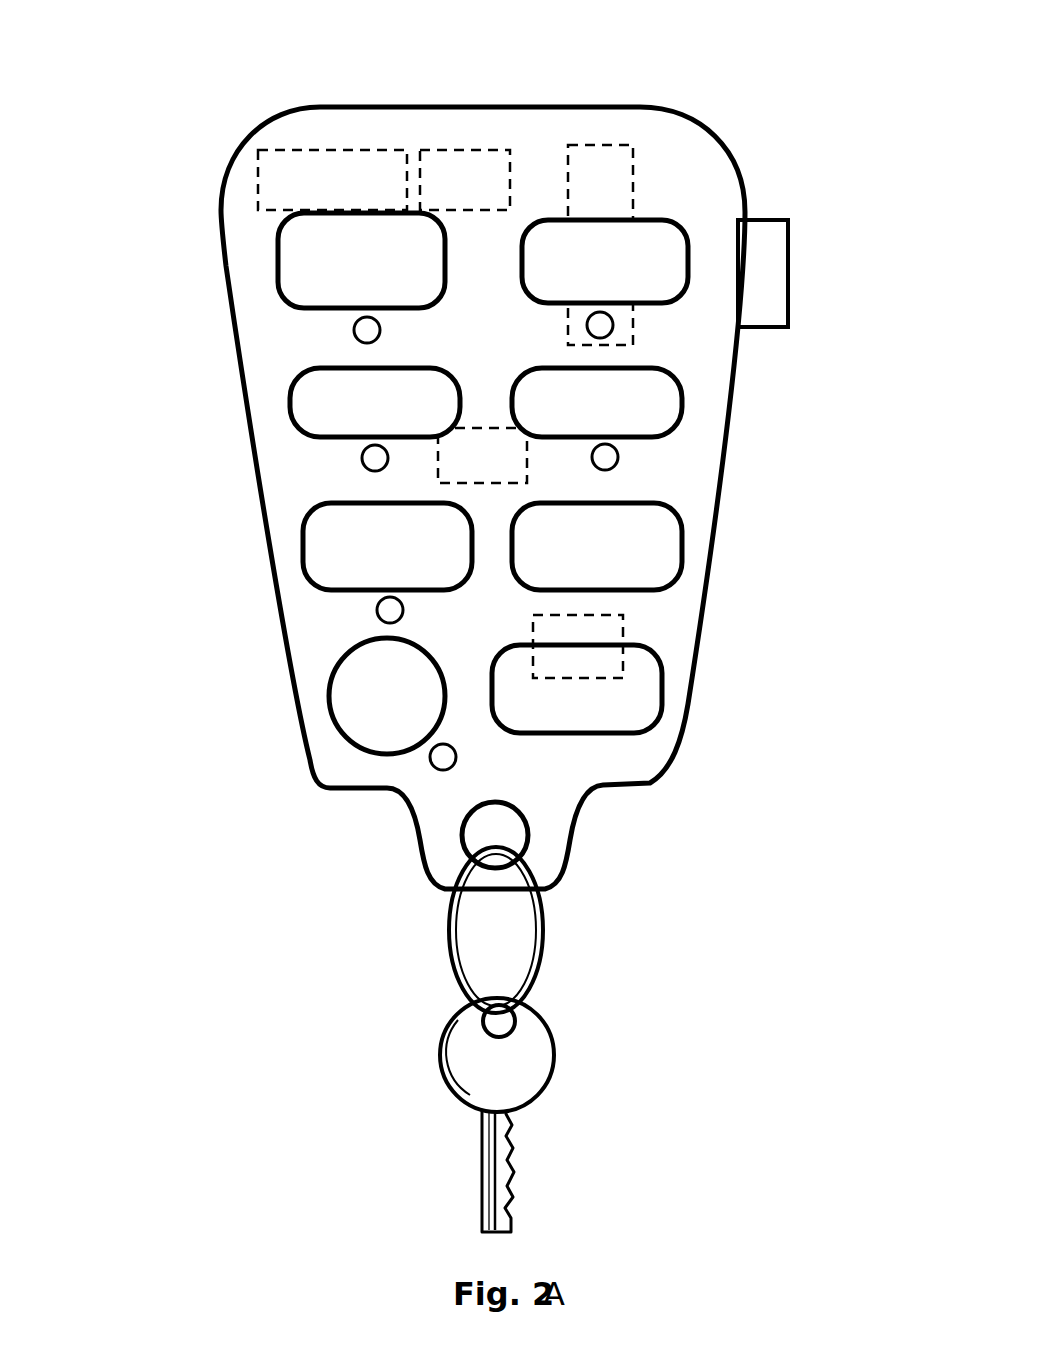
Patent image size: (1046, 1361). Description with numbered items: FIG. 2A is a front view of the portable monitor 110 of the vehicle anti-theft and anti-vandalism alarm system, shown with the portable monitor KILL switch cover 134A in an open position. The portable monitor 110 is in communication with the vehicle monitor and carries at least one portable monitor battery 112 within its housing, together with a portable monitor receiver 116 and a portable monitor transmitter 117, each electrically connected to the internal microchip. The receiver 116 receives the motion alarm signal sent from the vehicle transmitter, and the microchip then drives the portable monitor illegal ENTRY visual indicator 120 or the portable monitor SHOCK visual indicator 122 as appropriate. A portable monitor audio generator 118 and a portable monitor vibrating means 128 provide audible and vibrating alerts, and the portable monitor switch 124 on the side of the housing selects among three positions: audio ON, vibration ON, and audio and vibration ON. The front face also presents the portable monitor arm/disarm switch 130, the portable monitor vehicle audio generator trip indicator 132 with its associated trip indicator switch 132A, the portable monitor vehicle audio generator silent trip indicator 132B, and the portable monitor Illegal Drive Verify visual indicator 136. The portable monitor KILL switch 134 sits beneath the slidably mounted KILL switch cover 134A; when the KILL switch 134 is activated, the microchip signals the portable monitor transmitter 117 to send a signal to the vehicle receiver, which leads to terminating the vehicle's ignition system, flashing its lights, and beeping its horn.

The portable monitor 110 is at (530, 107).
The portable monitor battery 112 is at (636, 160).
The portable monitor receiver 116 is at (318, 152).
The portable monitor transmitter 117 is at (448, 150).
The portable monitor audio generator 118 is at (329, 693).
The portable monitor illegal ENTRY visual indicator 120 is at (274, 257).
The portable monitor SHOCK visual indicator 122 is at (689, 232).
The portable monitor switch 124 is at (790, 270).
The portable monitor vibrating means 128 is at (530, 467).
The portable monitor arm/disarm switch 130 is at (683, 542).
The portable monitor vehicle audio generator trip indicator 132 is at (291, 402).
The portable monitor vehicle audio generator trip indicator switch 132A is at (428, 763).
The portable monitor vehicle audio generator silent trip indicator 132B is at (681, 385).
The portable monitor KILL switch 134 is at (624, 625).
The portable monitor KILL switch cover 134A is at (663, 680).
The portable monitor Illegal Drive Verify visual indicator 136 is at (304, 542).